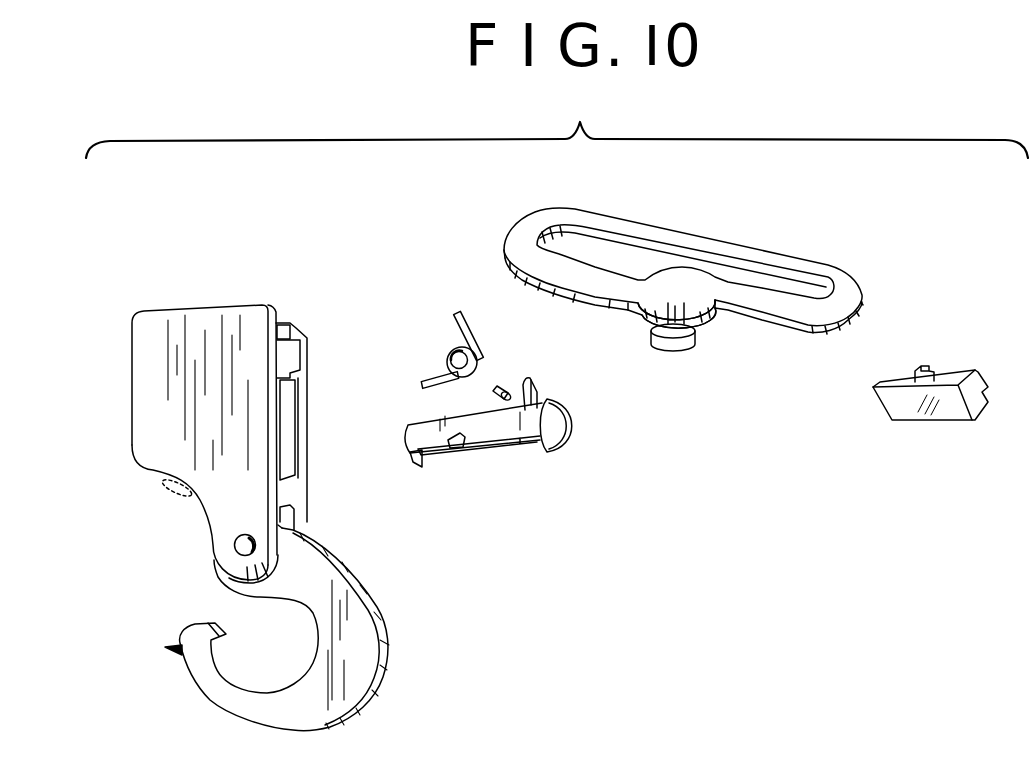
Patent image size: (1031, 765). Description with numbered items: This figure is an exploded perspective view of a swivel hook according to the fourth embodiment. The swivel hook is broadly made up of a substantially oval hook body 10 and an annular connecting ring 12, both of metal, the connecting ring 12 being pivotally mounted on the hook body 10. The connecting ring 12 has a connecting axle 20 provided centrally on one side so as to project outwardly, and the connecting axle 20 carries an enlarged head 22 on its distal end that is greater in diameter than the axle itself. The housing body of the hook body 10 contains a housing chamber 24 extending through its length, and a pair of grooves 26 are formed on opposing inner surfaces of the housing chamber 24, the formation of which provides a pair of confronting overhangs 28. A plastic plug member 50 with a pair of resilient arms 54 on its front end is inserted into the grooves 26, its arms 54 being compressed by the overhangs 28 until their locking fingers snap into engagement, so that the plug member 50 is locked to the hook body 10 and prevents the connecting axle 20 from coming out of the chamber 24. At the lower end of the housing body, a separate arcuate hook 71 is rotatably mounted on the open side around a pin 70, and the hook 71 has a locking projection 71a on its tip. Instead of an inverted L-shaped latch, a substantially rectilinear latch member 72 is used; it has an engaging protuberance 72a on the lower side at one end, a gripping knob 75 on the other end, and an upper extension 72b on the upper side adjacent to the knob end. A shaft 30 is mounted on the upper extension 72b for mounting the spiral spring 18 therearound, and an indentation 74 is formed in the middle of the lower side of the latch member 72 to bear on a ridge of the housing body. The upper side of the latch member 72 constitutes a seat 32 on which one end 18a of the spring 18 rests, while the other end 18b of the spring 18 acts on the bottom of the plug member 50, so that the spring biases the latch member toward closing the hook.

The hook body 10 is at (156, 364).
The connecting ring 12 is at (687, 297).
The spiral spring 18 is at (445, 347).
The one end of the spring 18a is at (452, 352).
The other end of the spring 18b is at (465, 320).
The connecting axle 20 is at (696, 314).
The enlarged head 22 is at (672, 342).
The housing chamber 24 is at (281, 395).
The grooves 26 is at (292, 360).
The overhangs 28 is at (285, 325).
The shaft 30 is at (499, 388).
The seat 32 is at (500, 450).
The plug member 50 is at (930, 393).
The resilient arms 54 is at (927, 366).
The pin 70 is at (234, 546).
The arcuate hook 71 is at (360, 668).
The locking projection 71a is at (167, 650).
The rectilinear latch member 72 is at (515, 447).
The engaging protuberance 72a is at (415, 464).
The upper extension 72b is at (538, 394).
The indentation 74 is at (462, 451).
The gripping knob 75 is at (572, 437).